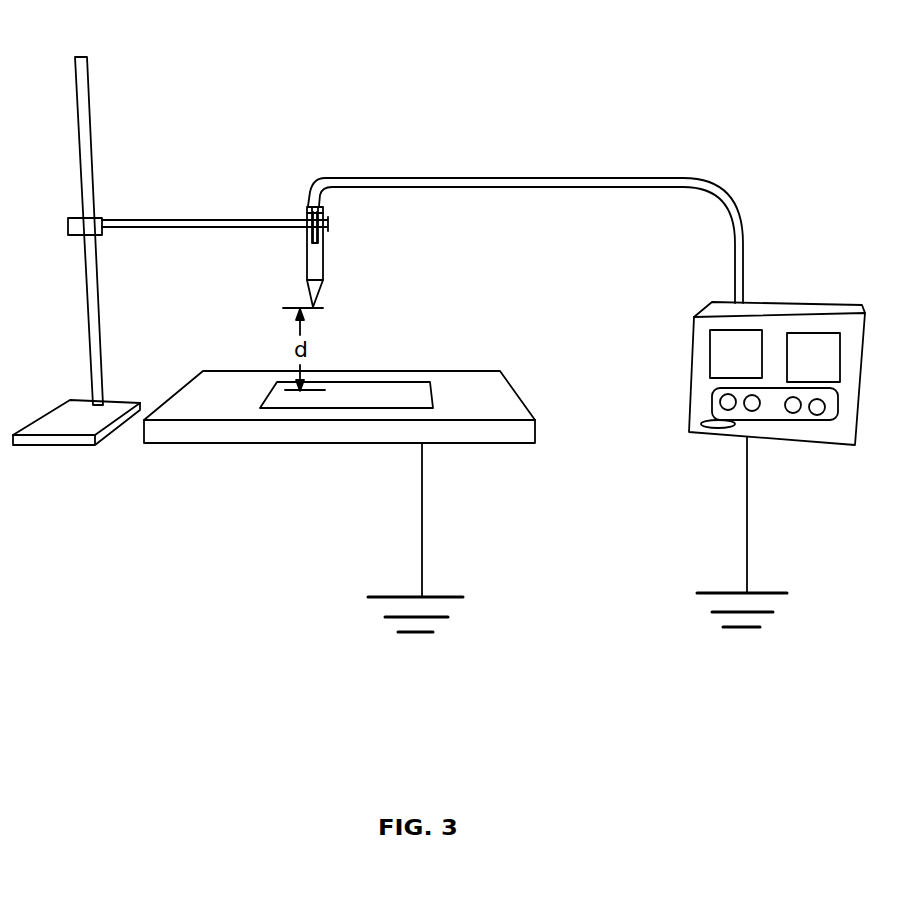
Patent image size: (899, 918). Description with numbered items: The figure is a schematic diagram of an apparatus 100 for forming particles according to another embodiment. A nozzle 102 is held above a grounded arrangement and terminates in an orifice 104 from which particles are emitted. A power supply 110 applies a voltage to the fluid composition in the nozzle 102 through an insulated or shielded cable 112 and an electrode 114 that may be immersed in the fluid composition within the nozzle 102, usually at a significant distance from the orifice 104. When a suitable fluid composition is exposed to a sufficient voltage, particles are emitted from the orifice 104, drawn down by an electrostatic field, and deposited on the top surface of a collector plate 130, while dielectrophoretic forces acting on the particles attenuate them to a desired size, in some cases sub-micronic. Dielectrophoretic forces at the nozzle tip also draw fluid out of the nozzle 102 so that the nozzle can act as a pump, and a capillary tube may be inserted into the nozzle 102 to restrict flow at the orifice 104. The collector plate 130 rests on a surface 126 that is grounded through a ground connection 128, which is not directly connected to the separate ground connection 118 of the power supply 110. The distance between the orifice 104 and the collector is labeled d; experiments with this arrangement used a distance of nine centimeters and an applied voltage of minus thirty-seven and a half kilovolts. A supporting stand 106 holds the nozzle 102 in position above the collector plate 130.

The apparatus 100 is at (752, 74).
The nozzle 102 is at (312, 268).
The orifice 104 is at (322, 308).
The stand 106 is at (90, 229).
The power supply 110 is at (802, 432).
The cable 112 is at (553, 178).
The electrode 114 is at (318, 230).
The ground connection 118 is at (745, 498).
The surface 126 is at (240, 433).
The ground connection 128 is at (420, 505).
The collector plate 130 is at (415, 397).